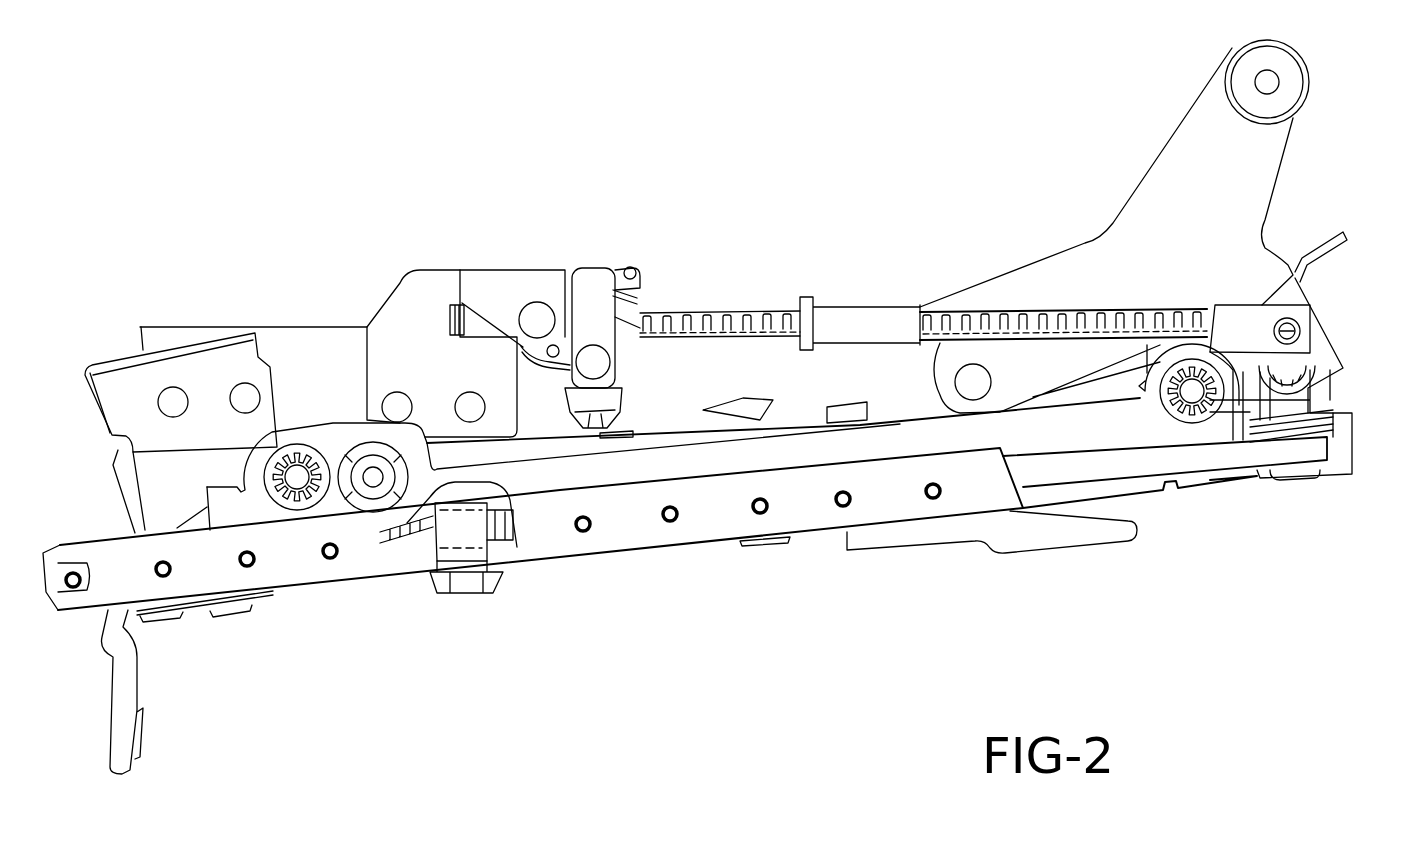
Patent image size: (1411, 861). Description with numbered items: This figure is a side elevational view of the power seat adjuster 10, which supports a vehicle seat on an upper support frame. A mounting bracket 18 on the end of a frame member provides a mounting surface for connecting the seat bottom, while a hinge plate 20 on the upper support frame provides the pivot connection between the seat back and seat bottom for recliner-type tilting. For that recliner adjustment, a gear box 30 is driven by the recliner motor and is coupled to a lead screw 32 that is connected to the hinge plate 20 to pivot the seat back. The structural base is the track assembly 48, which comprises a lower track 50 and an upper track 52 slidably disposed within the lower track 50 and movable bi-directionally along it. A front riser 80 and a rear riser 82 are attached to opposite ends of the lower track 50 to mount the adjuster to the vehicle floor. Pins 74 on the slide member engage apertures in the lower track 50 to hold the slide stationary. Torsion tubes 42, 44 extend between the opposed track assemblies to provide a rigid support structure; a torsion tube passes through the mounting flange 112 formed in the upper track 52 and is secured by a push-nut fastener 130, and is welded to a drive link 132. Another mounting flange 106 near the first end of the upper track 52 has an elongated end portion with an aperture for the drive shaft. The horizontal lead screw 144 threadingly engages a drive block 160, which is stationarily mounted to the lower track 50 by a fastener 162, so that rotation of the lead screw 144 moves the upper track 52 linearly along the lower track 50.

The power seat adjuster 10 is at (570, 181).
The mounting bracket 18 is at (172, 335).
The hinge plate 20 is at (1262, 181).
The gear box 30 is at (600, 278).
The lead screw 32 is at (990, 320).
The torsion tube 42 is at (1194, 393).
The torsion tube 44 is at (298, 472).
The track assembly 48 is at (760, 553).
The lower track 50 is at (625, 537).
The upper track 52 is at (1043, 447).
The pins 74 is at (332, 559).
The front riser 80 is at (139, 694).
The rear riser 82 is at (1003, 547).
The mounting flange 106 is at (253, 507).
The mounting flange 112 is at (1225, 406).
The fastener 130 is at (288, 458).
The drive link 132 is at (1190, 393).
The horizontal lead screw 144 is at (507, 543).
The drive block 160 is at (467, 553).
The fastener 162 is at (447, 593).